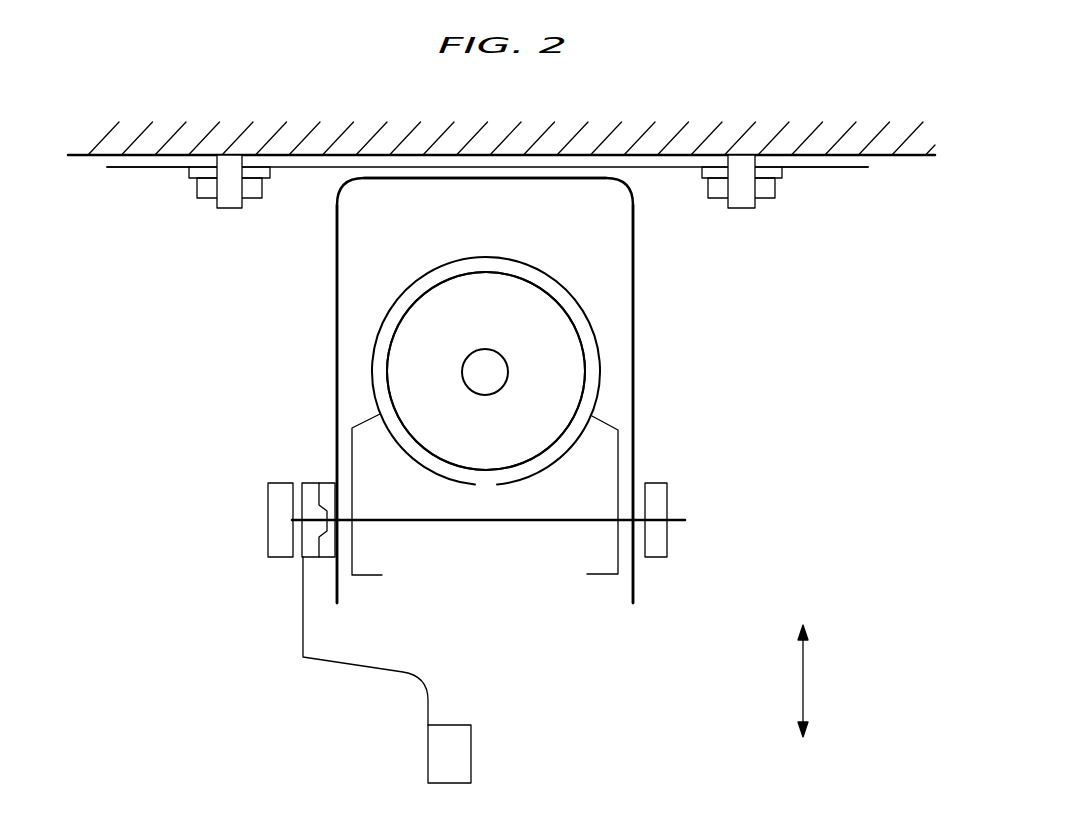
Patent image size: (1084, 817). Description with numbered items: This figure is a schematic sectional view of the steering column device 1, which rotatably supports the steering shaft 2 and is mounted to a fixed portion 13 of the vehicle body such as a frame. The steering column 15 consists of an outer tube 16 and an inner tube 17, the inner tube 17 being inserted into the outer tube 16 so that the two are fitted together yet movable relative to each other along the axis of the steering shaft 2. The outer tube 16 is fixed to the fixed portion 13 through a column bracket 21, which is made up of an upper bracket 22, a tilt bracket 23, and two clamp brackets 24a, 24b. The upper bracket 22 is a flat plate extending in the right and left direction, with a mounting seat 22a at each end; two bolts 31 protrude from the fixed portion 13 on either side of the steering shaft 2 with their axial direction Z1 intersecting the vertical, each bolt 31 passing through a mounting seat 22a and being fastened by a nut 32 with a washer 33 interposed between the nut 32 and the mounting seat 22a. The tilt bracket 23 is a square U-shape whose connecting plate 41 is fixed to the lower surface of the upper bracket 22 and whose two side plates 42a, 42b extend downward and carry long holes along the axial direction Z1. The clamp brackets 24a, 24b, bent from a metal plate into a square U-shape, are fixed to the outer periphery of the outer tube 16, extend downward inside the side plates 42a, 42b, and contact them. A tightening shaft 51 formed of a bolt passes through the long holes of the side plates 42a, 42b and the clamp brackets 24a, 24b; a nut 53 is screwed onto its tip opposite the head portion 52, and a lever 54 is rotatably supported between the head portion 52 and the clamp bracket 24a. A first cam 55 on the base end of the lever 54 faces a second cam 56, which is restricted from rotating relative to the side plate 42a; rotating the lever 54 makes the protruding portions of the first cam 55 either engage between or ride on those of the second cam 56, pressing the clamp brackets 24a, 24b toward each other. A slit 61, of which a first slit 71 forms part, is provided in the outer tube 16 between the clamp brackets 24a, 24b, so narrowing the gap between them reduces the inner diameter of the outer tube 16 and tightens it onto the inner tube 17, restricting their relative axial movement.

The steering column device 1 is at (236, 596).
The steering shaft 2 is at (520, 371).
The fixed portion 13 is at (311, 156).
The steering column 15 is at (499, 246).
The outer tube 16 is at (567, 289).
The inner tube 17 is at (413, 298).
The column bracket 21 is at (422, 154).
The upper bracket 22 is at (646, 161).
The mounting seat 22a is at (126, 172).
The tilt bracket 23 is at (646, 404).
The clamp bracket 24a is at (353, 480).
The clamp bracket 24b is at (617, 480).
The bolt 31 is at (228, 208).
The nut 32 is at (255, 197).
The washer 33 is at (193, 182).
The connecting plate 41 is at (447, 179).
The side plate 42a is at (336, 312).
The side plate 42b is at (636, 313).
The tightening shaft 51 is at (480, 523).
The head portion 52 is at (268, 497).
The nut 53 is at (667, 497).
The lever 54 is at (440, 757).
The first cam 55 is at (310, 483).
The second cam 56 is at (328, 483).
The slit 61 is at (496, 495).
The first slit 71 is at (522, 602).
The axial direction Z1 is at (805, 680).